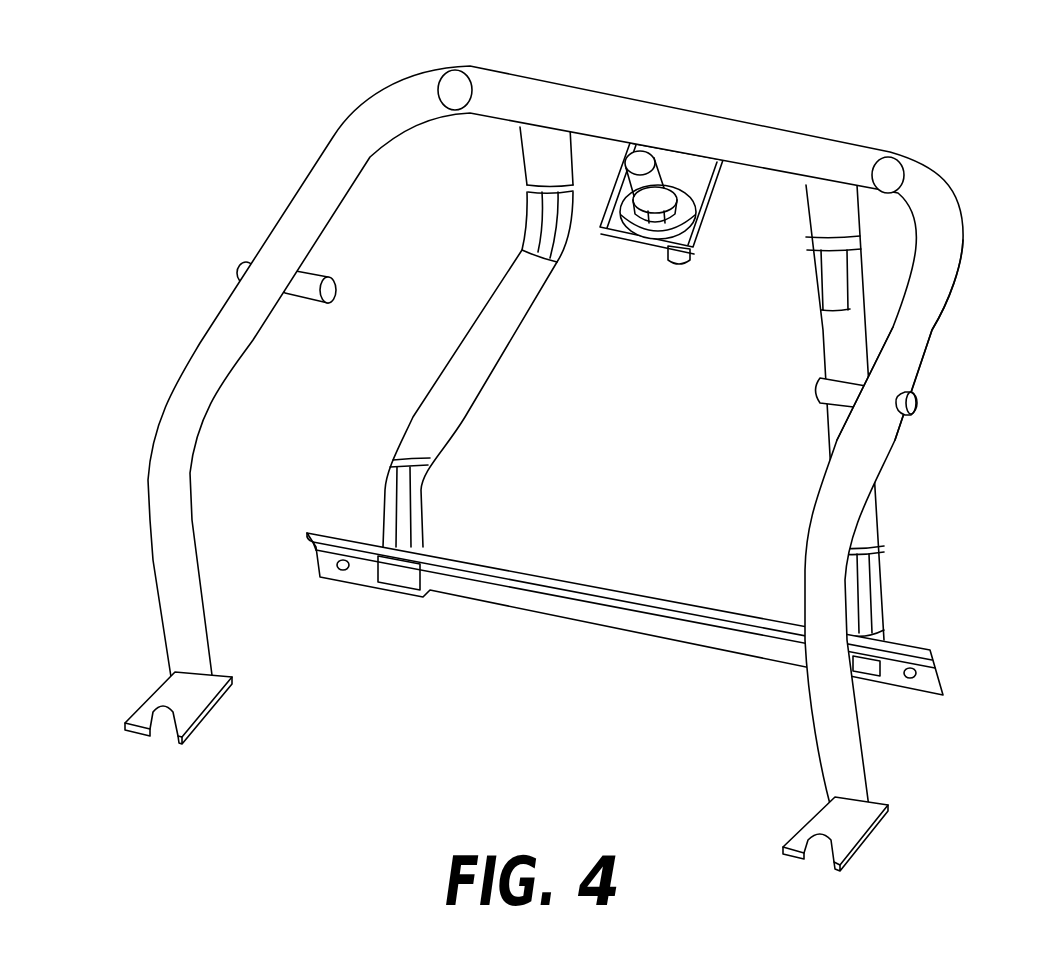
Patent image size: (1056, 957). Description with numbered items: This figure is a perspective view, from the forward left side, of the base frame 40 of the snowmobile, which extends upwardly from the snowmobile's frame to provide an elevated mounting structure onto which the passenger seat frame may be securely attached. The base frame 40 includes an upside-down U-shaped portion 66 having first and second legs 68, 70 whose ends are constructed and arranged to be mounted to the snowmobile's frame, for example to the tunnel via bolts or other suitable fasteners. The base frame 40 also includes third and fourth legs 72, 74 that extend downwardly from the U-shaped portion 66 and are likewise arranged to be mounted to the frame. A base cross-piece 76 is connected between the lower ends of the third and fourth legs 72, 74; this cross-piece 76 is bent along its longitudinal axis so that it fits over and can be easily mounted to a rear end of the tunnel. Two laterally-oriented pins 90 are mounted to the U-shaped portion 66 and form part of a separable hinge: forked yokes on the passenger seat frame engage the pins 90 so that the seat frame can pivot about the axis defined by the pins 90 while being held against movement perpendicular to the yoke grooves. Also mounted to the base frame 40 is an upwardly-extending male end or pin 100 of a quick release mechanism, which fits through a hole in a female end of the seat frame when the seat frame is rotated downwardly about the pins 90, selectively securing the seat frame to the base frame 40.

The base frame 40 is at (577, 468).
The U-shaped portion 66 is at (930, 317).
The first leg 68 is at (825, 735).
The second leg 70 is at (197, 605).
The third leg 72 is at (833, 330).
The fourth leg 74 is at (532, 294).
The base cross-piece 76 is at (588, 584).
The pins 90 is at (818, 390).
The pin 100 is at (640, 158).